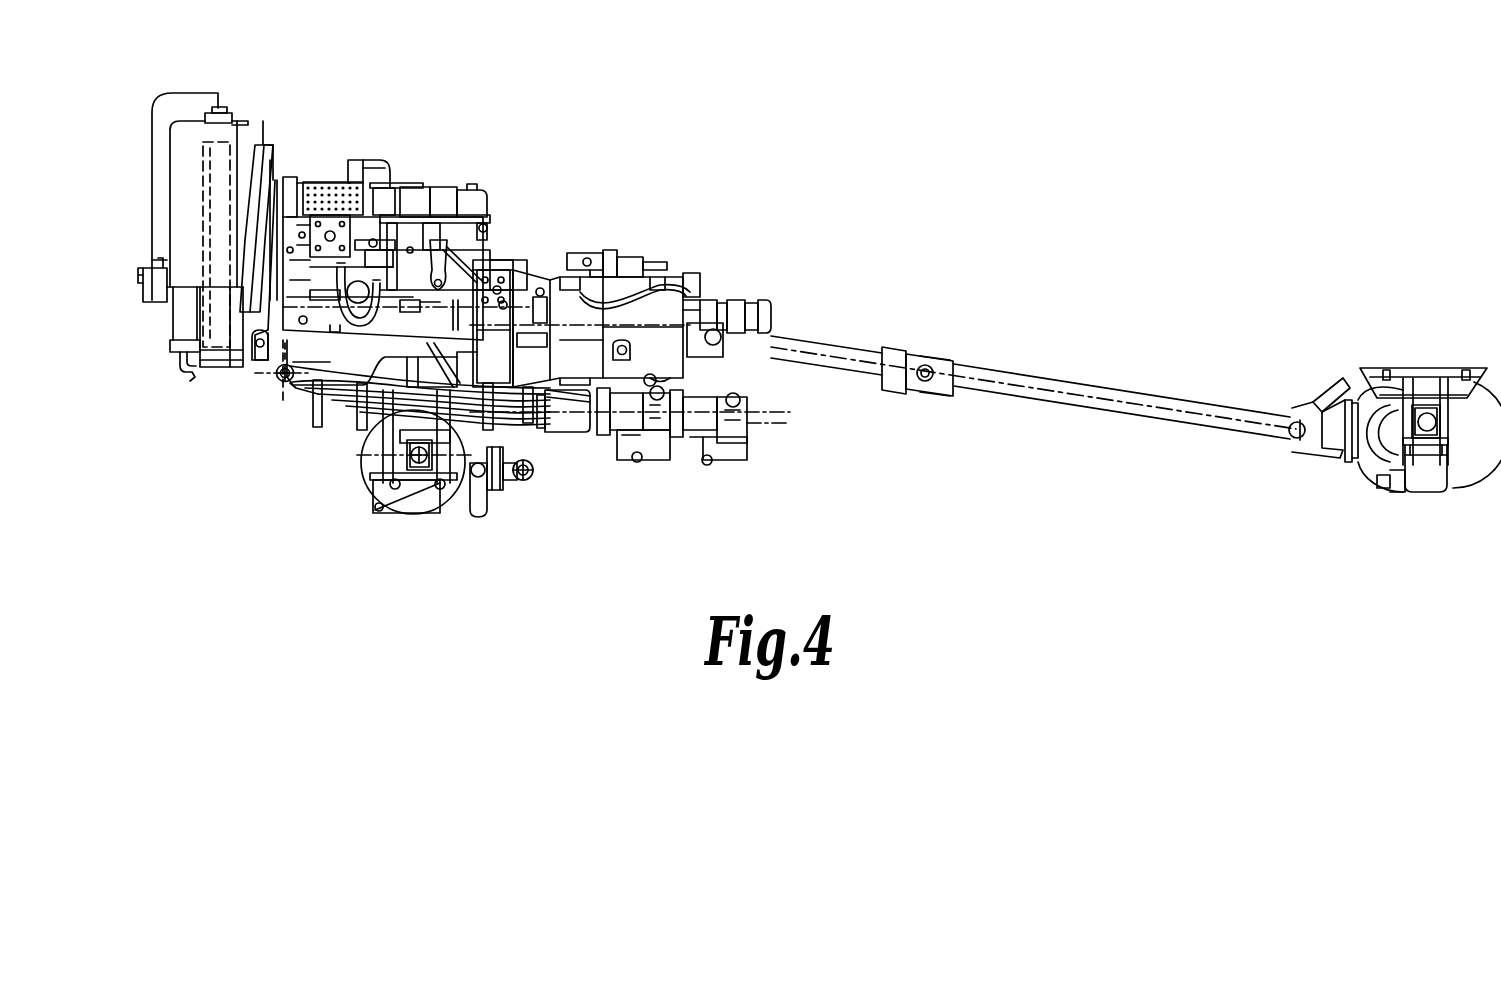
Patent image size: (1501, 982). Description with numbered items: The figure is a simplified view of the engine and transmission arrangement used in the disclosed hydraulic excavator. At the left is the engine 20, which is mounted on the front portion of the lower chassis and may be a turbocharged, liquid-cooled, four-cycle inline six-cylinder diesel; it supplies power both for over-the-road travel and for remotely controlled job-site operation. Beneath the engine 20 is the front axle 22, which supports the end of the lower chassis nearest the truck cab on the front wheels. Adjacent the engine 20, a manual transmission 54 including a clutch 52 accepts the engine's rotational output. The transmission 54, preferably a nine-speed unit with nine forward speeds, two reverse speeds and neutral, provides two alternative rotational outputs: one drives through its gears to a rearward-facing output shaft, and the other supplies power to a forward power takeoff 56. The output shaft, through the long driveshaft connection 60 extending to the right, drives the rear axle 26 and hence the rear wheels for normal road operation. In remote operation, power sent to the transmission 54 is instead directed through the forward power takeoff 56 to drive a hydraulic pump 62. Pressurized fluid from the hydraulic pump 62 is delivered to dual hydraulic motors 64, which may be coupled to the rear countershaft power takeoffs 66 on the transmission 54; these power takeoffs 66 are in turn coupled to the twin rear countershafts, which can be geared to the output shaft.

The engine 20 is at (381, 155).
The front axle 22 is at (358, 475).
The rear axle 26 is at (1360, 362).
The clutch 52 is at (545, 268).
The manual transmission 54 is at (567, 250).
The forward power takeoff 56 is at (561, 447).
The driveshaft connection 60 is at (1065, 362).
The hydraulic pump 62 is at (672, 460).
The dual hydraulic motors 64 is at (775, 293).
The rear countershaft power takeoffs 66 is at (711, 293).